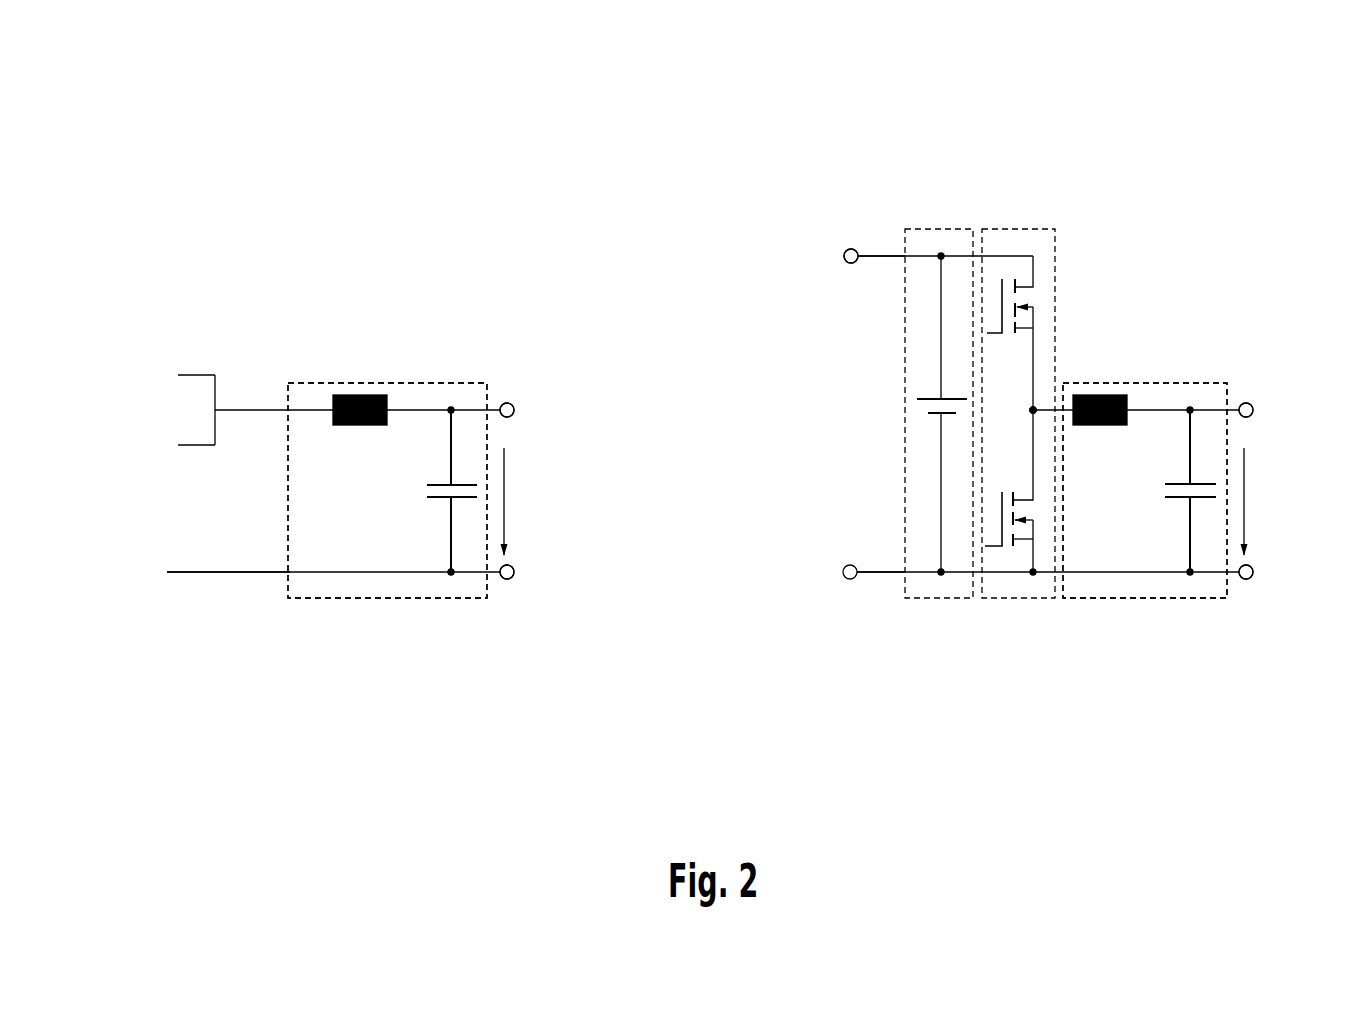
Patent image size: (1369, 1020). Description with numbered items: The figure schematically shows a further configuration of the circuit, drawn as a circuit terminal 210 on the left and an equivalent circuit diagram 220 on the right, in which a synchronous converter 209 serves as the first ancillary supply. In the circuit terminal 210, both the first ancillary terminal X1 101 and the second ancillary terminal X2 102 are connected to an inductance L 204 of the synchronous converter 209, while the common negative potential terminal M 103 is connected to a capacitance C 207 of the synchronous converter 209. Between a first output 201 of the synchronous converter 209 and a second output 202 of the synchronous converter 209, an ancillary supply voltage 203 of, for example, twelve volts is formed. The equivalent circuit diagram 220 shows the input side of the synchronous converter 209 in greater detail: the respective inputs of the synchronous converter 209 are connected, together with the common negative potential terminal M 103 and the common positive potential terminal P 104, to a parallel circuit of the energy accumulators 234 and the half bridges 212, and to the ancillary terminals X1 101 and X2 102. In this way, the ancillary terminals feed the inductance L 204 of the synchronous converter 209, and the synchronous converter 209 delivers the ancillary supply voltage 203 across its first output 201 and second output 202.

The circuit terminal 210 is at (110, 160).
The equivalent circuit diagram 220 is at (857, 163).
The first ancillary terminal X1 101 is at (163, 370).
The second ancillary terminal X2 102 is at (163, 440).
The common negative potential terminal M 103 is at (165, 568).
The common positive potential terminal P 104 is at (840, 248).
The first output 201 is at (520, 410).
The second output 202 is at (520, 572).
The ancillary supply voltage 203 is at (522, 498).
The inductance L 204 is at (350, 392).
The capacitance C 207 is at (435, 500).
The synchronous converter 209 is at (353, 600).
The half bridges 212 is at (1015, 600).
The energy accumulators 234 is at (928, 600).